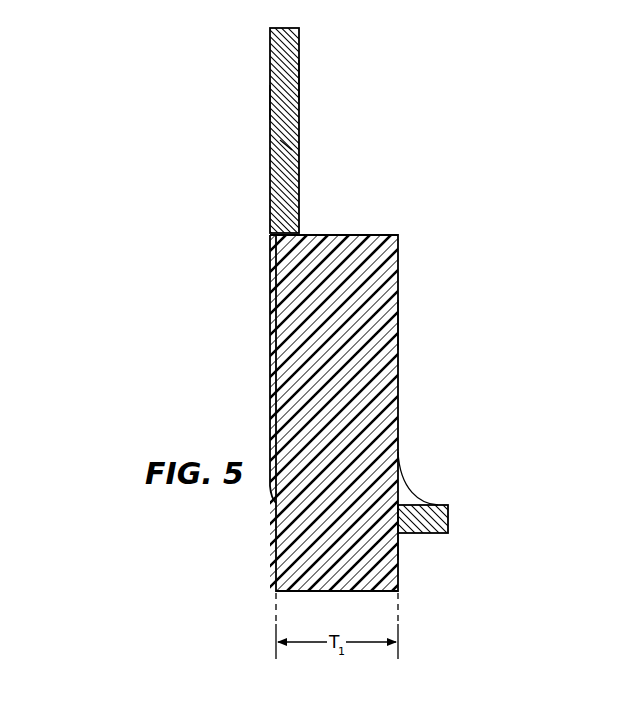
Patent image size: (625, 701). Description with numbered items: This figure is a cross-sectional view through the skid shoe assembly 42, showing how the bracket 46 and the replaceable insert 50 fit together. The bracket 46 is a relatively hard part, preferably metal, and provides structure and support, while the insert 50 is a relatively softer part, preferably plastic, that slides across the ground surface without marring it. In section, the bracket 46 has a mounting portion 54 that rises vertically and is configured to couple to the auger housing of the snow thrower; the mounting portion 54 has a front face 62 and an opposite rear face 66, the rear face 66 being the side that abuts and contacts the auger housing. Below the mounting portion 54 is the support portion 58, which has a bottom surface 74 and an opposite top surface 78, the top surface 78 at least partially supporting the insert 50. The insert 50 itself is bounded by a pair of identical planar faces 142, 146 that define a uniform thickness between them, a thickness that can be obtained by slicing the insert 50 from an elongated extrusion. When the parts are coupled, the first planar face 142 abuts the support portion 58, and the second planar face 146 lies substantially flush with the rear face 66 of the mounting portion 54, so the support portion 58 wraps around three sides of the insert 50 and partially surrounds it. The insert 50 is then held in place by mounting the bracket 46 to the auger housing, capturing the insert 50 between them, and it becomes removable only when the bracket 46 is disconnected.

The skid shoe assembly 42 is at (104, 71).
The bracket 46 is at (287, 28).
The replaceable insert 50 is at (387, 236).
The mounting portion 54 is at (287, 145).
The support portion 58 is at (402, 531).
The front face 62 is at (299, 77).
The rear face 66 is at (270, 103).
The bottom surface 74 is at (447, 533).
The top surface 78 is at (440, 504).
The first planar face 142 is at (398, 328).
The second planar face 146 is at (275, 315).